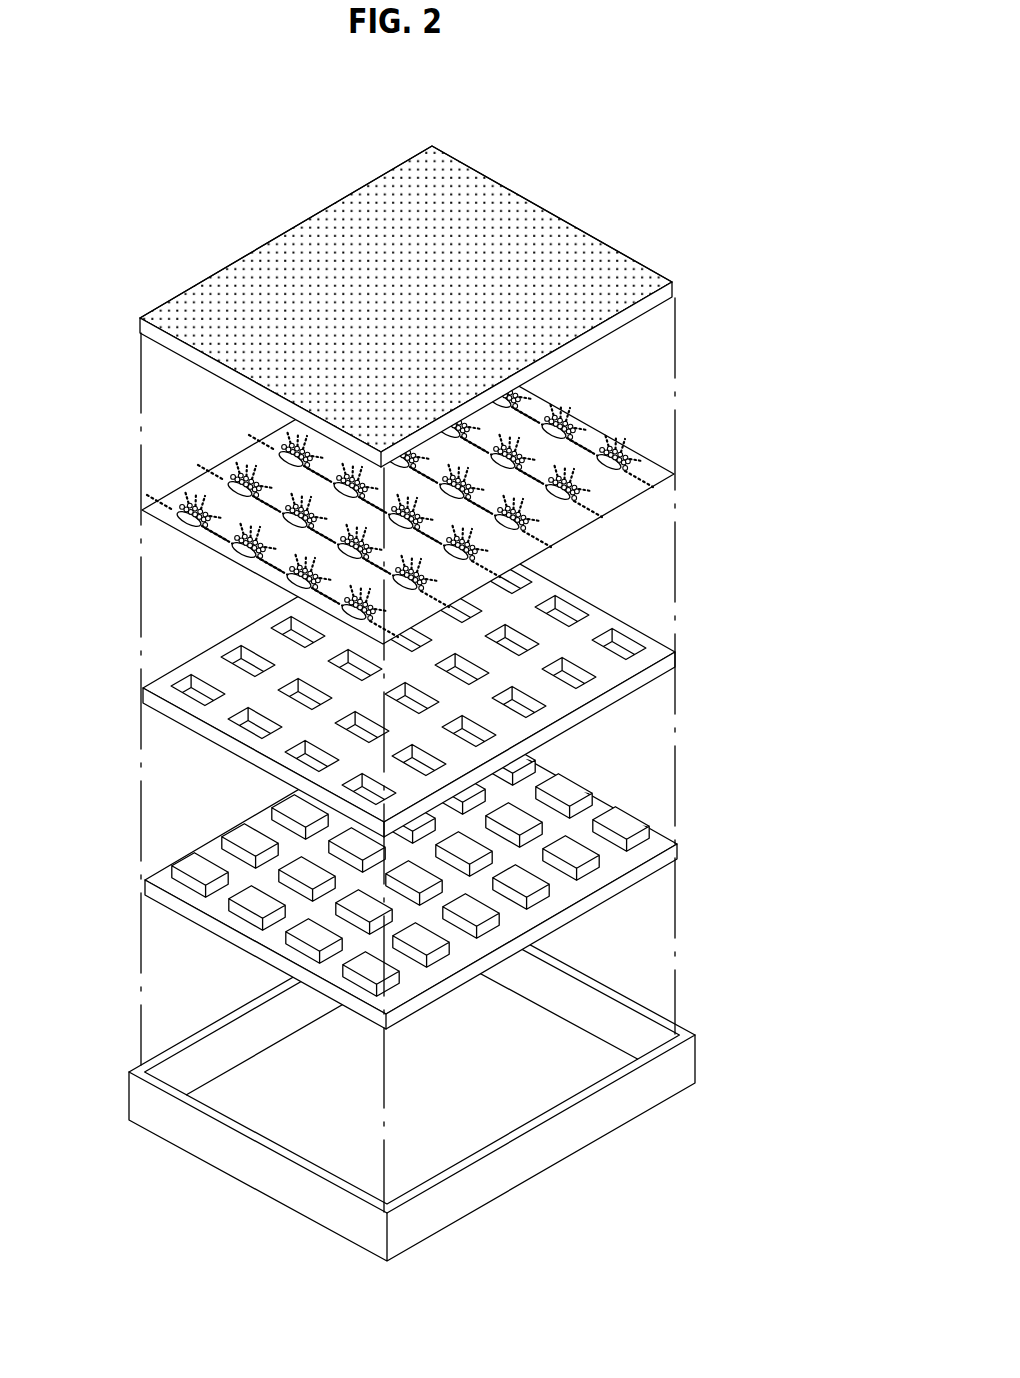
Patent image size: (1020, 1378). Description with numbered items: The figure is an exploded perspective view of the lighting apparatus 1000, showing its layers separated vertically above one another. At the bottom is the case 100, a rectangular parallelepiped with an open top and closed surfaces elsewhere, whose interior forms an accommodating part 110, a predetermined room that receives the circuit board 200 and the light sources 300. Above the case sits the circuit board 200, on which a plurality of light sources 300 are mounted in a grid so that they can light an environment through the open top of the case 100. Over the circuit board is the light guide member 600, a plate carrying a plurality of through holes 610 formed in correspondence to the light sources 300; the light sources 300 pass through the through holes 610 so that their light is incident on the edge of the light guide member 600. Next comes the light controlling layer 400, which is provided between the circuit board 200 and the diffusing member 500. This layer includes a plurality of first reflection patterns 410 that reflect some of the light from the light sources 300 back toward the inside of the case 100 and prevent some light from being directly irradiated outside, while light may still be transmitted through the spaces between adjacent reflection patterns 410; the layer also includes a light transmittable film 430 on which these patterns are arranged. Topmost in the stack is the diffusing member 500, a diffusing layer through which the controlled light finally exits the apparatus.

The lighting apparatus 1000 is at (192, 121).
The case 100 is at (455, 1077).
The accommodating part 110 is at (567, 1052).
The circuit board 200 is at (443, 868).
The light sources 300 is at (627, 825).
The light controlling layer 400 is at (455, 491).
The first reflection patterns 410 is at (613, 466).
The light transmittable film 430 is at (607, 500).
The diffusing member 500 is at (622, 262).
The light guide member 600 is at (449, 676).
The through holes 610 is at (620, 645).